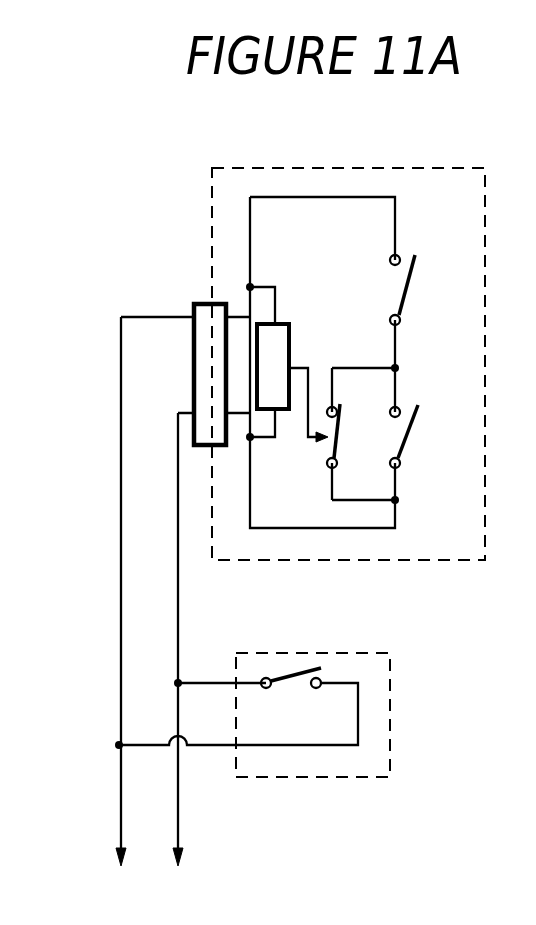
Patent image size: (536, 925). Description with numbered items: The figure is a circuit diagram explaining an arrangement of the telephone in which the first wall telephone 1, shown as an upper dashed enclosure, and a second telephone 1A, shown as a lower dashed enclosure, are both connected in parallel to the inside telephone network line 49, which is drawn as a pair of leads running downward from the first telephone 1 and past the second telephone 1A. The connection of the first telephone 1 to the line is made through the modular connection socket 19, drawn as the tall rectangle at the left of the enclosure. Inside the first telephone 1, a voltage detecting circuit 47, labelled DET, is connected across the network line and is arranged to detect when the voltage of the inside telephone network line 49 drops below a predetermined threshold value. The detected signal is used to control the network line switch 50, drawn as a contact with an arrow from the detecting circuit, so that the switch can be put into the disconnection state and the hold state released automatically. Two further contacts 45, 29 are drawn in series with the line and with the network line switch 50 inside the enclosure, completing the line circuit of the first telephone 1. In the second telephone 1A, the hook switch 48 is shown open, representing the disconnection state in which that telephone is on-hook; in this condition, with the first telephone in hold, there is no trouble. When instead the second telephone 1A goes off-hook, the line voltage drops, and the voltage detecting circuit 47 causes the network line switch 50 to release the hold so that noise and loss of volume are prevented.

The key telephone 1 is at (485, 203).
The second telephone 1A is at (390, 770).
The modular connection socket 19 is at (197, 303).
The switch 29 is at (408, 437).
The switch 45 is at (409, 285).
The voltage detecting circuit 47 is at (289, 322).
The hook switch 48 is at (303, 667).
The inside telephone network line 49 is at (178, 583).
The network line switch 50 is at (328, 450).